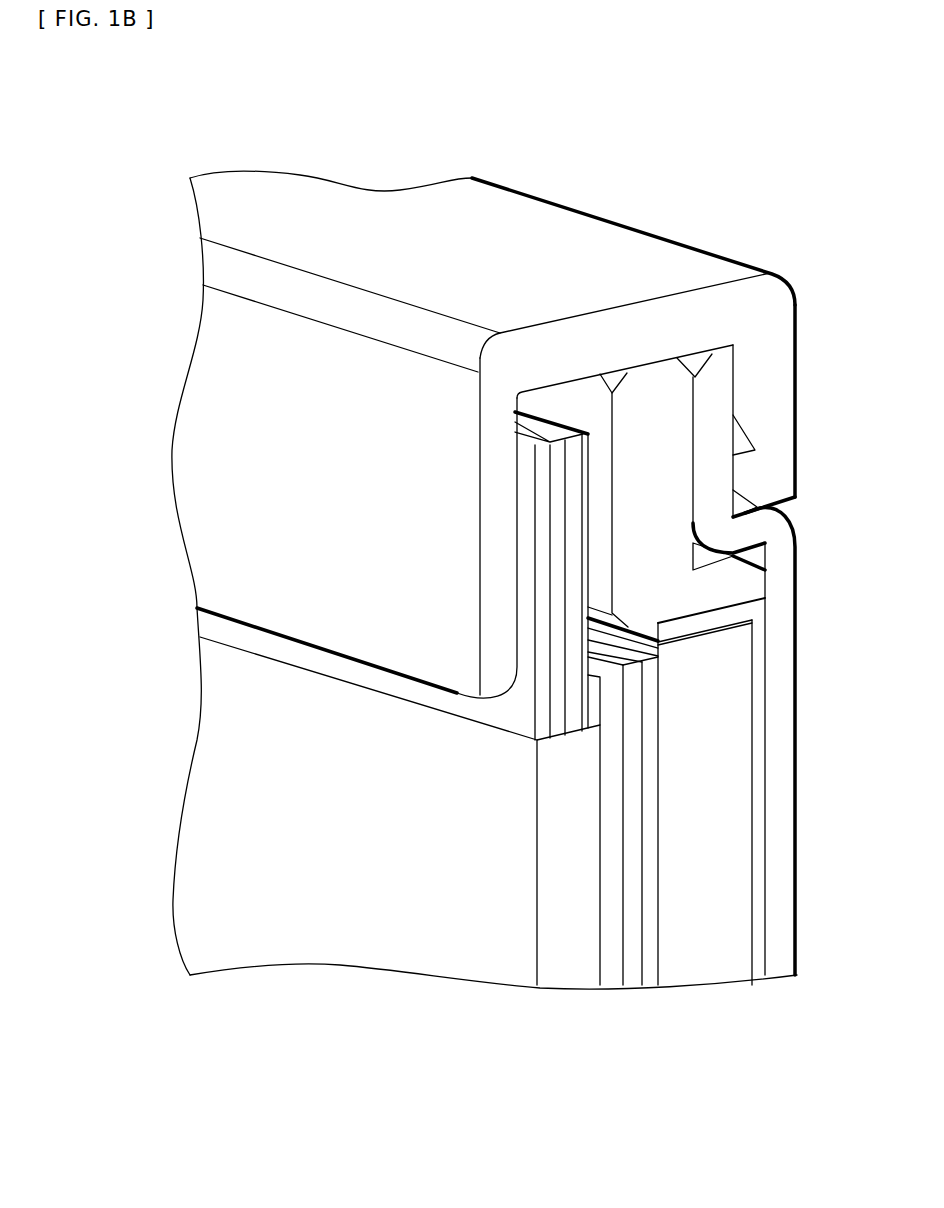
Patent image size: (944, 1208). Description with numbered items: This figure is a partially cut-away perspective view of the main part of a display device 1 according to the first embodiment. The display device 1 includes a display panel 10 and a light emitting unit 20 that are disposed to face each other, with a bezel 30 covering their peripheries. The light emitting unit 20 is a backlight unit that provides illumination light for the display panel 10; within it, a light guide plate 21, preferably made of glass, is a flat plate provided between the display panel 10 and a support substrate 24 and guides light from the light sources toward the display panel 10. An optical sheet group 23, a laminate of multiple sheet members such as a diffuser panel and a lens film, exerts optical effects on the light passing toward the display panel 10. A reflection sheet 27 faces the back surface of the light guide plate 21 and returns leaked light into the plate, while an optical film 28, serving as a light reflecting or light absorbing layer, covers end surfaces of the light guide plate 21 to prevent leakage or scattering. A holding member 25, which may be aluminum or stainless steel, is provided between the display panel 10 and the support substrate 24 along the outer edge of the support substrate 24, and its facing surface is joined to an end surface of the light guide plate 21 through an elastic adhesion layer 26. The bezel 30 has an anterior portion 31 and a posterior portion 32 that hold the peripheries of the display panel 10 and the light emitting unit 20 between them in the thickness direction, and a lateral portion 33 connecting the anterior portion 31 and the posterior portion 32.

The display device 1 is at (338, 1015).
The display panel 10 is at (572, 973).
The light emitting unit 20 is at (768, 1052).
The light guide plate 21 is at (707, 978).
The optical sheet group 23 is at (658, 1003).
The support substrate 24 is at (787, 577).
The holding member 25 is at (670, 472).
The adhesion layer 26 is at (745, 612).
The reflection sheet 27 is at (760, 973).
The optical film 28 is at (763, 637).
The bezel 30 is at (783, 103).
The anterior portion 31 is at (388, 400).
The posterior portion 32 is at (765, 345).
The lateral portion 33 is at (577, 345).